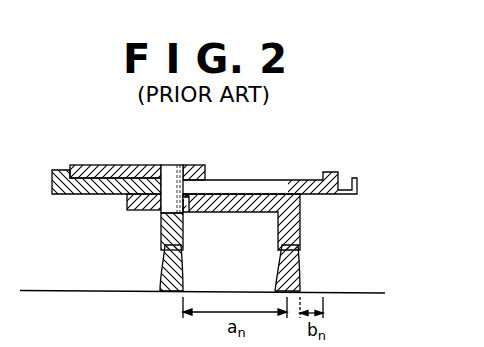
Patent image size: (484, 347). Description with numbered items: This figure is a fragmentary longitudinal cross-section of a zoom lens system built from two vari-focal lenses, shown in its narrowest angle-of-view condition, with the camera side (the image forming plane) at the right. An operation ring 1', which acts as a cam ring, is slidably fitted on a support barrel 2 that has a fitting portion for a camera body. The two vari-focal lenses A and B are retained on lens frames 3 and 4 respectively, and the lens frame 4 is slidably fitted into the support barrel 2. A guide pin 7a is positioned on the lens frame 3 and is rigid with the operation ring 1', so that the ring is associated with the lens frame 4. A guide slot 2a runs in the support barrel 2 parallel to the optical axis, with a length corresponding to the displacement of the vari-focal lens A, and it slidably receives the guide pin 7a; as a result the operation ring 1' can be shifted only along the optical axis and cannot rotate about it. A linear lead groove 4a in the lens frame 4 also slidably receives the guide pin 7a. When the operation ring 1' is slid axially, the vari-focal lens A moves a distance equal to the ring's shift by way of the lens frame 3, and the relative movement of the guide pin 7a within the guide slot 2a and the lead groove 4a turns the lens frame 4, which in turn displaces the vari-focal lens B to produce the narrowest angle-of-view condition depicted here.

The operation ring 1' is at (128, 168).
The guide pin 7a is at (177, 165).
The support barrel 2 is at (332, 172).
The guide slot 2a is at (292, 190).
The lens frame 3 is at (161, 231).
The lens frame 4 is at (301, 228).
The linear lead groove 4a is at (188, 199).
The vari-focal lens A is at (163, 272).
The vari-focal lens B is at (300, 275).